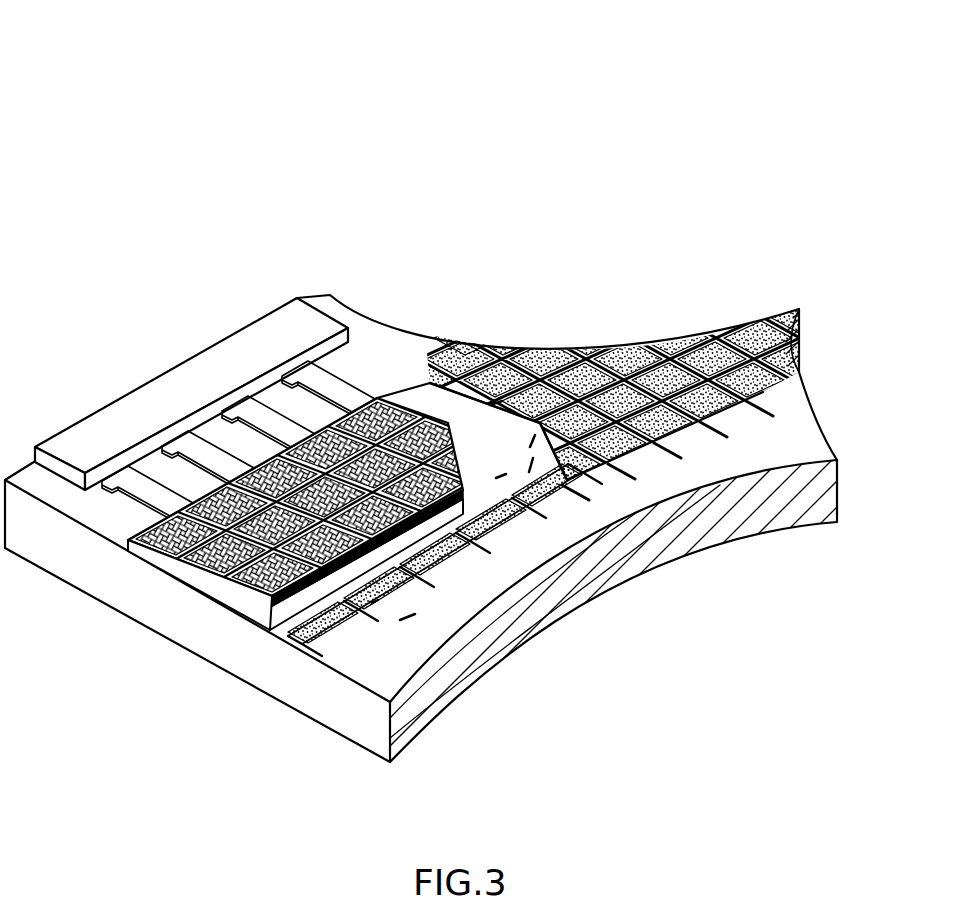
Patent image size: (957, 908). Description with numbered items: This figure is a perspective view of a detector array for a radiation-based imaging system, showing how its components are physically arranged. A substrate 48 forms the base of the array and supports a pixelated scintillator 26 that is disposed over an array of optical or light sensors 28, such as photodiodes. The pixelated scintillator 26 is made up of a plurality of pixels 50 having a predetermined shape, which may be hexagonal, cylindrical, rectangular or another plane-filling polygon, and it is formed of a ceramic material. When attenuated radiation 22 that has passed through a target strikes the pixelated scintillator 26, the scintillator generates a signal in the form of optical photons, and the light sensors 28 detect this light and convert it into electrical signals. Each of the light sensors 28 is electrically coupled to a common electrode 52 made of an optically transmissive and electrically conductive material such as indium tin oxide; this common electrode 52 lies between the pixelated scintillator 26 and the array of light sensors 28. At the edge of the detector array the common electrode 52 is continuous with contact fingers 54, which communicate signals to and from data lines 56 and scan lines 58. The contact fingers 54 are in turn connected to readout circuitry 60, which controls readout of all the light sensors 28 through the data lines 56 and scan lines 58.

The attenuated radiation 22 is at (147, 84).
The pixelated scintillator 26 is at (170, 574).
The light sensors 28 is at (698, 394).
The substrate 48 is at (86, 582).
The pixels 50 is at (165, 521).
The common electrode 52 is at (503, 471).
The contact fingers 54 is at (300, 374).
The data lines 56 is at (765, 394).
The scan lines 58 is at (770, 380).
The readout circuitry 60 is at (155, 388).